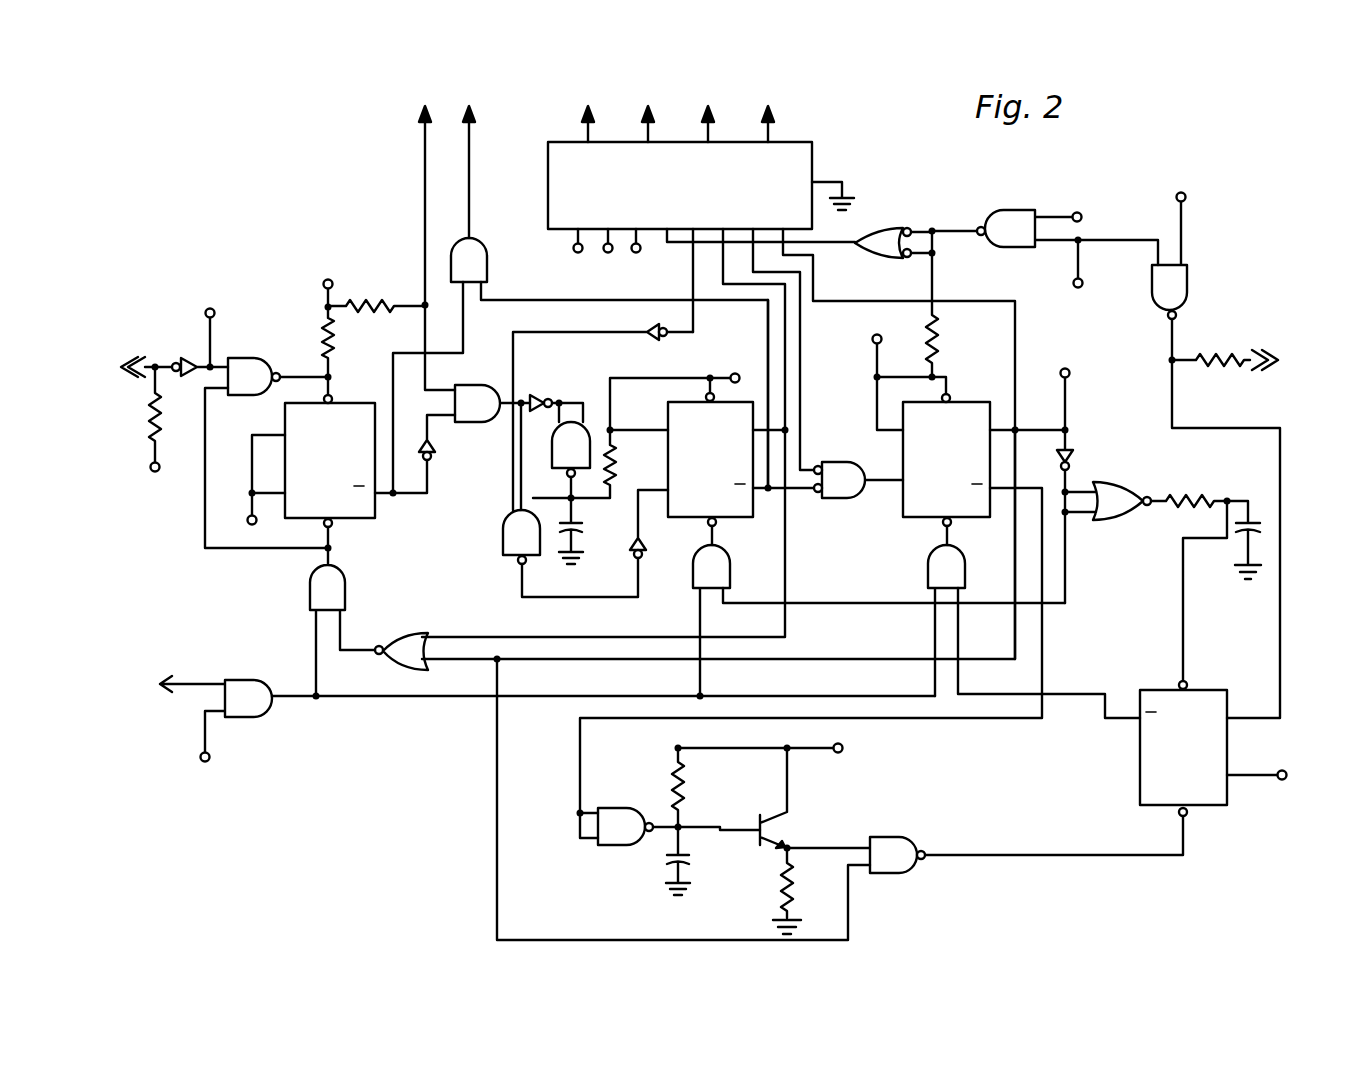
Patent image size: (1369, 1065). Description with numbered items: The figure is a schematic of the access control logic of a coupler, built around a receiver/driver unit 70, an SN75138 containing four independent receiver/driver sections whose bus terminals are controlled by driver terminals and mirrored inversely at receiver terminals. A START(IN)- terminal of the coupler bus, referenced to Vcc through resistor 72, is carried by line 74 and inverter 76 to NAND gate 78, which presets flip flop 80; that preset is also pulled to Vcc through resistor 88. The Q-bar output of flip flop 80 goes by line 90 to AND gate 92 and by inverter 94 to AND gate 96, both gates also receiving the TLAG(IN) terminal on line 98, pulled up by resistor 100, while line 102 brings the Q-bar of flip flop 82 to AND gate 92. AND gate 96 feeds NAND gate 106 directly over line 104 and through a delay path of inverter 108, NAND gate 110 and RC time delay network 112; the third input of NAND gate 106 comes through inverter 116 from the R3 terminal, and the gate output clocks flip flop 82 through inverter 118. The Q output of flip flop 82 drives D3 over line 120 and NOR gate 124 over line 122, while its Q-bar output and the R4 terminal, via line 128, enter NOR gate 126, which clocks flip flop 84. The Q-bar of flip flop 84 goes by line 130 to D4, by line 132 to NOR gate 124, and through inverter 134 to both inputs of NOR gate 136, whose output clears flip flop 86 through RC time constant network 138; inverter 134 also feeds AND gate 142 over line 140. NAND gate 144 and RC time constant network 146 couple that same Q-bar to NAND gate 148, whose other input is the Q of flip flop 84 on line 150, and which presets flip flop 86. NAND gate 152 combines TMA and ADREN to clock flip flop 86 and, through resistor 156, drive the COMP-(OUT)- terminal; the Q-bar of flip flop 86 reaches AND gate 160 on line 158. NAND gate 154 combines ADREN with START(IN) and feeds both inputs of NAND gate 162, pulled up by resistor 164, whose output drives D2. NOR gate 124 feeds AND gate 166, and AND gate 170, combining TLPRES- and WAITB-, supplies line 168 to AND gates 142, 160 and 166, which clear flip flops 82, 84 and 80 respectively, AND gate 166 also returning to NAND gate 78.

The receiver/driver unit 70 is at (822, 152).
The resistor 72 is at (150, 392).
The line 74 is at (160, 362).
The inverter 76 is at (190, 358).
The NAND gate 78 is at (252, 362).
The flip flop 80 is at (375, 520).
The flip flop 82 is at (735, 517).
The flip flop 84 is at (905, 512).
The flip flop 86 is at (1200, 808).
The resistor 88 is at (335, 365).
The line 90 is at (430, 353).
The AND gate 92 is at (487, 265).
The inverter 94 is at (440, 455).
The AND gate 96 is at (462, 422).
The line 98 is at (425, 208).
The resistor 100 is at (370, 300).
The line 102 is at (505, 300).
The line 104 is at (522, 455).
The NAND gate 106 is at (503, 545).
The inverter 108 is at (545, 393).
The NAND gate 110 is at (580, 460).
The RC time delay network 112 is at (628, 532).
The inverter 116 is at (648, 338).
The inverter 118 is at (647, 552).
The line 120 is at (787, 350).
The line 122 is at (805, 555).
The NOR gate 124 is at (415, 633).
The NOR gate 126 is at (838, 462).
The line 128 is at (802, 422).
The line 130 is at (945, 285).
The line 132 is at (775, 660).
The inverter 134 is at (1075, 460).
The NOR gate 136 is at (1105, 520).
The RC time constant network 138 is at (1248, 476).
The line 140 is at (840, 603).
The AND gate 142 is at (693, 560).
The NAND gate 144 is at (630, 808).
The RC time constant network 146 is at (760, 744).
The NAND gate 148 is at (905, 837).
The line 150 is at (497, 845).
The NAND gate 152 is at (1187, 280).
The NAND gate 154 is at (1000, 212).
The resistor 156 is at (1220, 372).
The line 158 is at (1085, 694).
The AND gate 160 is at (985, 565).
The NAND gate 162 is at (880, 228).
The resistor 164 is at (940, 345).
The AND gate 166 is at (345, 598).
The line 168 is at (383, 698).
The AND gate 170 is at (245, 680).